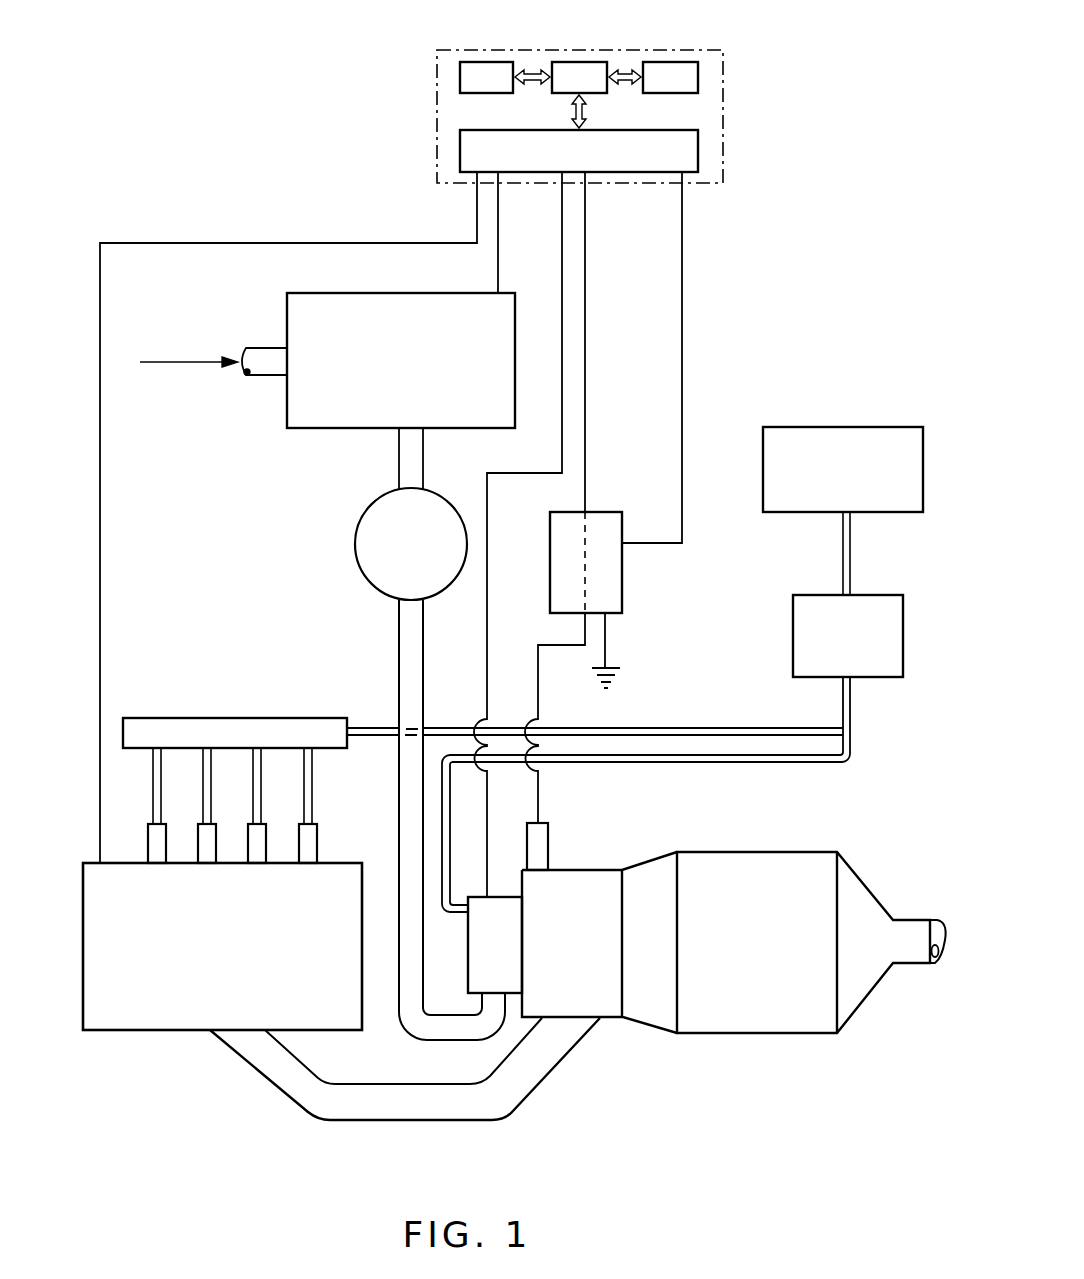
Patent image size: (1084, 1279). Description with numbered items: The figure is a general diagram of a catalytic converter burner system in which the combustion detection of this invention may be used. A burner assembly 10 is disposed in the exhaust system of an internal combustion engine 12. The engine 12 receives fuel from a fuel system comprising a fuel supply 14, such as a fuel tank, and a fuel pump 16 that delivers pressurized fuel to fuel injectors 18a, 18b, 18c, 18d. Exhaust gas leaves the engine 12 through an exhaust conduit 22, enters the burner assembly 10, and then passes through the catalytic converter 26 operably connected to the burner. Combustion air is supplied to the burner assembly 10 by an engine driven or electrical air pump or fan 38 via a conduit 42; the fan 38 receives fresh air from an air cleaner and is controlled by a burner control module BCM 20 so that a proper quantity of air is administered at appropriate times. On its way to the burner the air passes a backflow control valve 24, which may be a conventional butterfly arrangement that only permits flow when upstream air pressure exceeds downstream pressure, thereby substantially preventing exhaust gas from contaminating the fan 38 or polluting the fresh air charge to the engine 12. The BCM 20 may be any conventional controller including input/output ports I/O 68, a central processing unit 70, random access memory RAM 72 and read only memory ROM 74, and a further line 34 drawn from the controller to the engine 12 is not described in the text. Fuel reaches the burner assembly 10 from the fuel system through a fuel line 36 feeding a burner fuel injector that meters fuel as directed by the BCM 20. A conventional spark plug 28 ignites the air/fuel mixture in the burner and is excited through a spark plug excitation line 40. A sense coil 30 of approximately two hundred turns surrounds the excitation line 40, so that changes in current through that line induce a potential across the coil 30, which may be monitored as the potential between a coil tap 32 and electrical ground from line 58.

The burner assembly 10 is at (598, 980).
The internal combustion engine 12 is at (172, 1033).
The fuel supply 14 is at (889, 440).
The fuel pump 16 is at (893, 612).
The fuel injector 18a is at (153, 848).
The fuel injector 18b is at (208, 863).
The fuel injector 18c is at (258, 863).
The fuel injector 18d is at (313, 848).
The burner control module 20 is at (437, 107).
The exhaust conduit 22 is at (360, 1118).
The backflow control valve 24 is at (358, 532).
The catalytic converter 26 is at (762, 1015).
The spark plug 28 is at (540, 845).
The sense coil 30 is at (613, 530).
The coil tap 32 is at (688, 325).
The engine signal line 34 is at (100, 580).
The fuel line 36 is at (718, 762).
The air pump or fan 38 is at (365, 412).
The spark plug excitation line 40 is at (592, 312).
The conduit 42 is at (412, 690).
The electrical ground line 58 is at (612, 648).
The input/output ports 68 is at (474, 151).
The central processing unit 70 is at (580, 62).
The random access memory 72 is at (460, 72).
The read only memory 74 is at (698, 76).